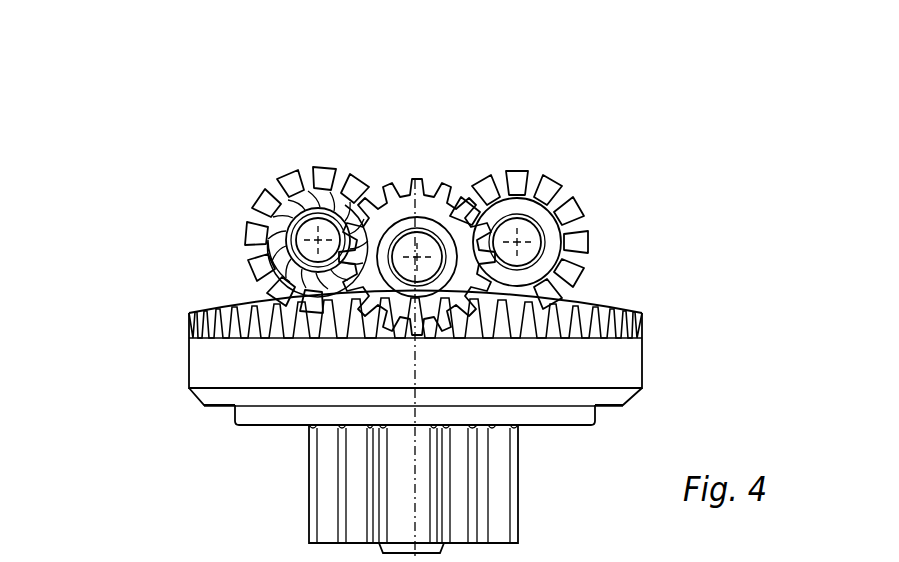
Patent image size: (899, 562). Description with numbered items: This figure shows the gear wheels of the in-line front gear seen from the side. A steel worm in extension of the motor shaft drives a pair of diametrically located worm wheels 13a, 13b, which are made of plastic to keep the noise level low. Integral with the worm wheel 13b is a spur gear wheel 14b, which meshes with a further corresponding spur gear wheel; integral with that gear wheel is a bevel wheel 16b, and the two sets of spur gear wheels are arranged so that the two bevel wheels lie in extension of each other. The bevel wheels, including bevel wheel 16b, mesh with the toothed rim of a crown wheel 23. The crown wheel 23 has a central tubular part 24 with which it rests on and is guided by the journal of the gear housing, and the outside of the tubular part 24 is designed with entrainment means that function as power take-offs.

The worm wheel 13a is at (573, 207).
The worm wheel 13b is at (233, 156).
The spur gear wheel 14b is at (255, 195).
The bevel wheel 16b is at (412, 187).
The crown wheel 23 is at (188, 373).
The central tubular part 24 is at (307, 493).